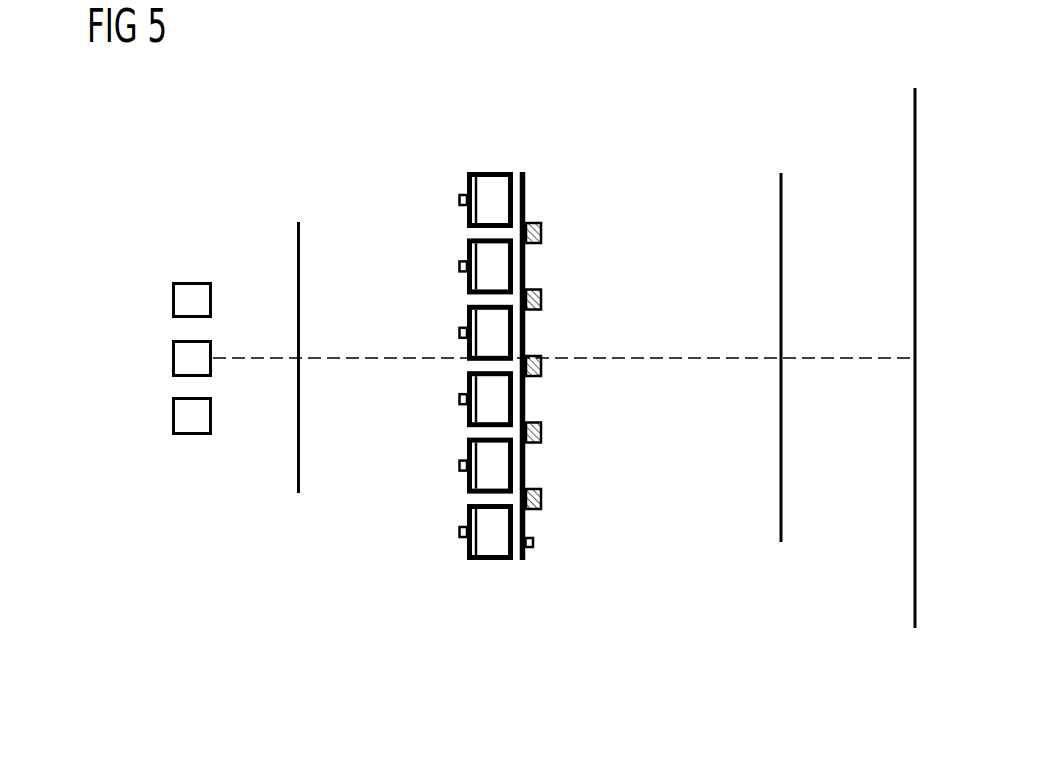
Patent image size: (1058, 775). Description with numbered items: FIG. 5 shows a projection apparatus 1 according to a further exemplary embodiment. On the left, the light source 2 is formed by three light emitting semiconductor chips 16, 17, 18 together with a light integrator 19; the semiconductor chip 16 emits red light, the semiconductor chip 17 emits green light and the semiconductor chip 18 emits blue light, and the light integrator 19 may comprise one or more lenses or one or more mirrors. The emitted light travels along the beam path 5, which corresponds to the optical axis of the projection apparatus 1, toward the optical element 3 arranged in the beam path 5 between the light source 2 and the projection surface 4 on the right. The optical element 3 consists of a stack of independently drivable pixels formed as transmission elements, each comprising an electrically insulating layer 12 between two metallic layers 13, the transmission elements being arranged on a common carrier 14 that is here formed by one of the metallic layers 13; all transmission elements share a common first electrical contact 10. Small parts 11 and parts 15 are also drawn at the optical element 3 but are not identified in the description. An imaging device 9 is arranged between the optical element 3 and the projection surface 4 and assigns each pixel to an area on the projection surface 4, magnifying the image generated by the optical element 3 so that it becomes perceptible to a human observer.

The projection apparatus 1 is at (822, 56).
The light source 2 is at (305, 567).
The optical element 3 is at (540, 567).
The projection surface 4 is at (913, 603).
The beam path 5 is at (353, 357).
The imaging device 9 is at (779, 523).
The first electrical contact 10 is at (533, 543).
The coupling element 11 is at (458, 199).
The electrically insulating layer 12 is at (502, 182).
The metallic layer 13 is at (469, 171).
The carrier 14 is at (525, 190).
The spacer 15 is at (541, 233).
The red light emitting semiconductor chip 16 is at (187, 297).
The green light emitting semiconductor chip 17 is at (187, 356).
The blue light emitting semiconductor chip 18 is at (187, 413).
The light integrator 19 is at (297, 481).